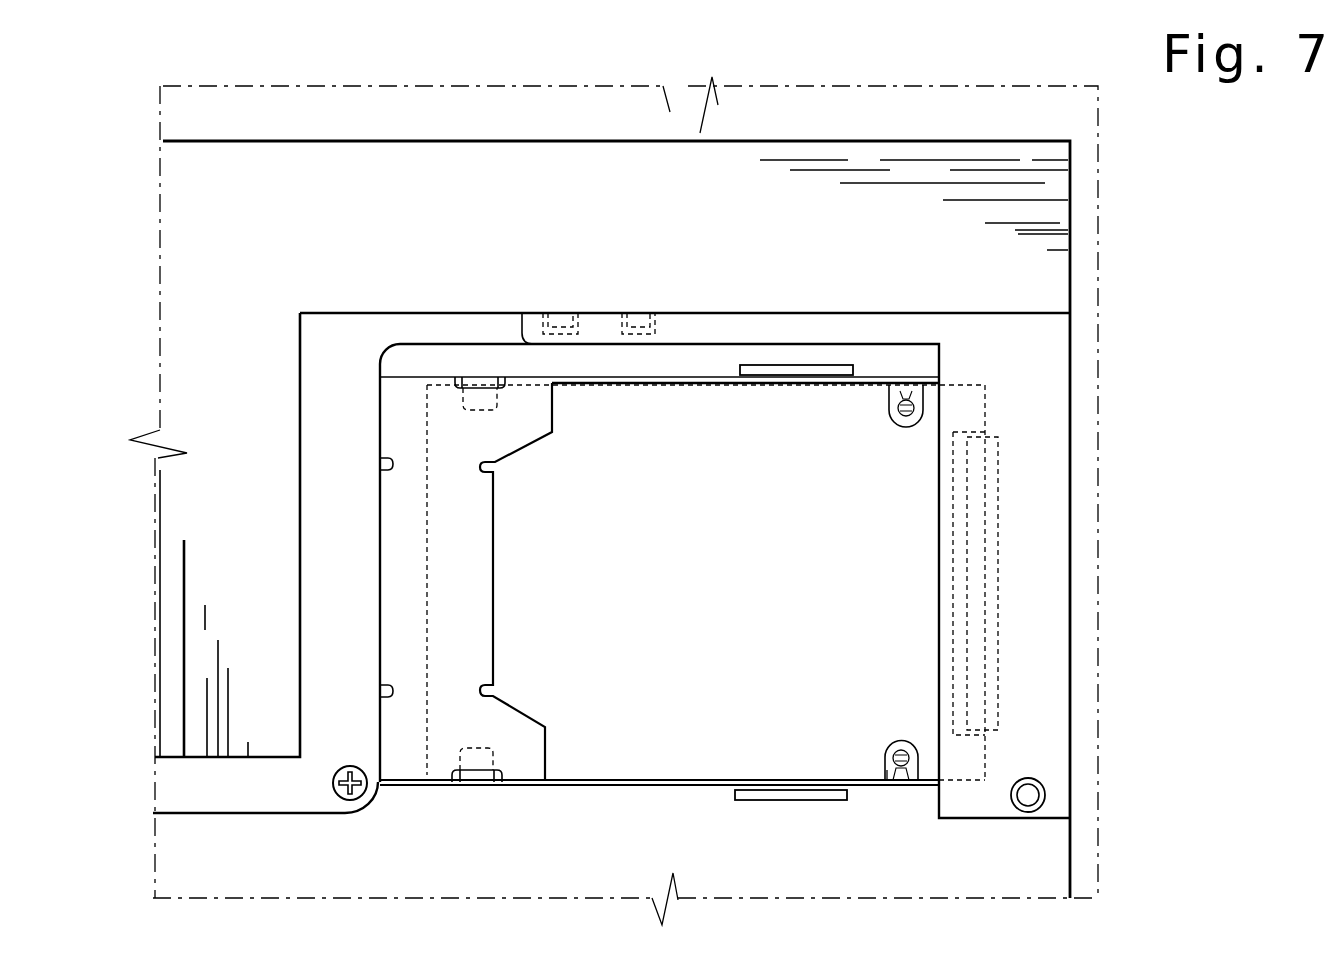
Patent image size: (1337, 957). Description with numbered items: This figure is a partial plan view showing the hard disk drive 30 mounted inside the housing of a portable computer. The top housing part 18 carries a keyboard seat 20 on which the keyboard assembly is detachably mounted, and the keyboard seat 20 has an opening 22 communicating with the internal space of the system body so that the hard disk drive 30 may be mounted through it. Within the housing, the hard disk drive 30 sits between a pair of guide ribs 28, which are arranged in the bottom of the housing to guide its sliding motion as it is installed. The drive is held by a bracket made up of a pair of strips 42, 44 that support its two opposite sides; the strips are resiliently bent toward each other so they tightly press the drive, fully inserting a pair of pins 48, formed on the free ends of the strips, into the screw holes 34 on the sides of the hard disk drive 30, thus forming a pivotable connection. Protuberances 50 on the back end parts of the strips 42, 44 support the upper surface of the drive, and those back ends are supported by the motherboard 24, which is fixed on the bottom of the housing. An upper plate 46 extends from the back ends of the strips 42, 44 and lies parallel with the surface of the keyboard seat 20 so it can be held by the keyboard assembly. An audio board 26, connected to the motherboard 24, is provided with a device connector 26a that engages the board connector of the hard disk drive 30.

The top housing part 18 is at (1083, 381).
The keyboard seat 20 is at (1047, 250).
The opening 22 is at (1040, 865).
The motherboard 24 is at (178, 780).
The audio board 26 is at (1045, 502).
The device connector 26a is at (1000, 606).
The guide ribs 28 is at (798, 365).
The hard disk drive 30 is at (613, 757).
The screw holes 34 is at (913, 785).
The strip 42 is at (686, 787).
The strip 44 is at (690, 380).
The upper plate 46 is at (470, 575).
The pins 48 is at (888, 785).
The protuberances 50 is at (458, 758).